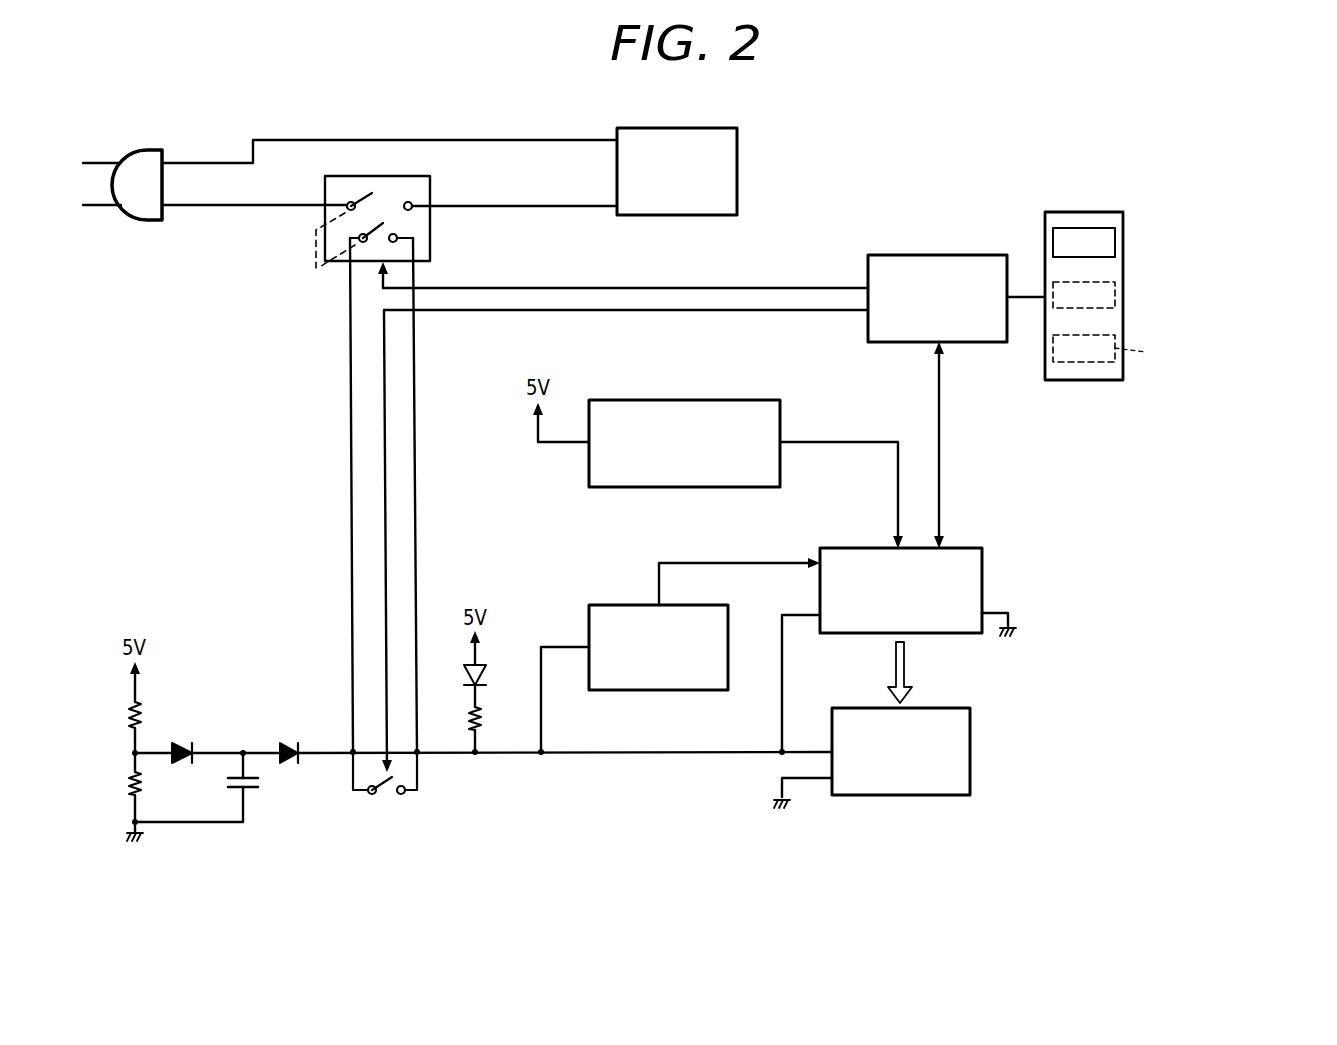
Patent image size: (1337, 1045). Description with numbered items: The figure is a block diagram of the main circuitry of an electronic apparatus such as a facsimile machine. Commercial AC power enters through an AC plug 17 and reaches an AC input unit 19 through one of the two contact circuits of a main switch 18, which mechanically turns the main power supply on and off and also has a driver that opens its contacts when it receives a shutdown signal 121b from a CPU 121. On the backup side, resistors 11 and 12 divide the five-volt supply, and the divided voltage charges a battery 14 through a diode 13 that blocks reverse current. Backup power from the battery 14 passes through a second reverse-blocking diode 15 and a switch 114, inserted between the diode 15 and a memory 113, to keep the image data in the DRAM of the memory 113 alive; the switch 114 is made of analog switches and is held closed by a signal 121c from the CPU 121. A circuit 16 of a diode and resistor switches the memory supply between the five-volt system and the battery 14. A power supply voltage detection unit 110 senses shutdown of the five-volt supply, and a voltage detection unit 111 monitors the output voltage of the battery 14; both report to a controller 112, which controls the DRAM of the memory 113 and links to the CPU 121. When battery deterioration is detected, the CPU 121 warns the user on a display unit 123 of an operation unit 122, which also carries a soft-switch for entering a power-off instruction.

The resistor 11 is at (125, 716).
The resistor 12 is at (125, 786).
The diode 13 is at (181, 740).
The battery 14 is at (258, 782).
The diode 15 is at (289, 740).
The circuit 16 is at (486, 670).
The AC plug 17 is at (150, 150).
The main switch 18 is at (430, 232).
The AC input unit 19 is at (707, 128).
The power supply voltage detection unit 110 is at (780, 420).
The voltage detection unit 111 is at (728, 622).
The controller 112 is at (982, 565).
The memory 113 is at (970, 736).
The switch 114 is at (1115, 295).
The CPU 121 is at (968, 255).
The shutdown signal 121b is at (441, 290).
The signal 121c is at (418, 318).
The operation unit 122 is at (1108, 212).
The display unit 123 is at (1115, 240).